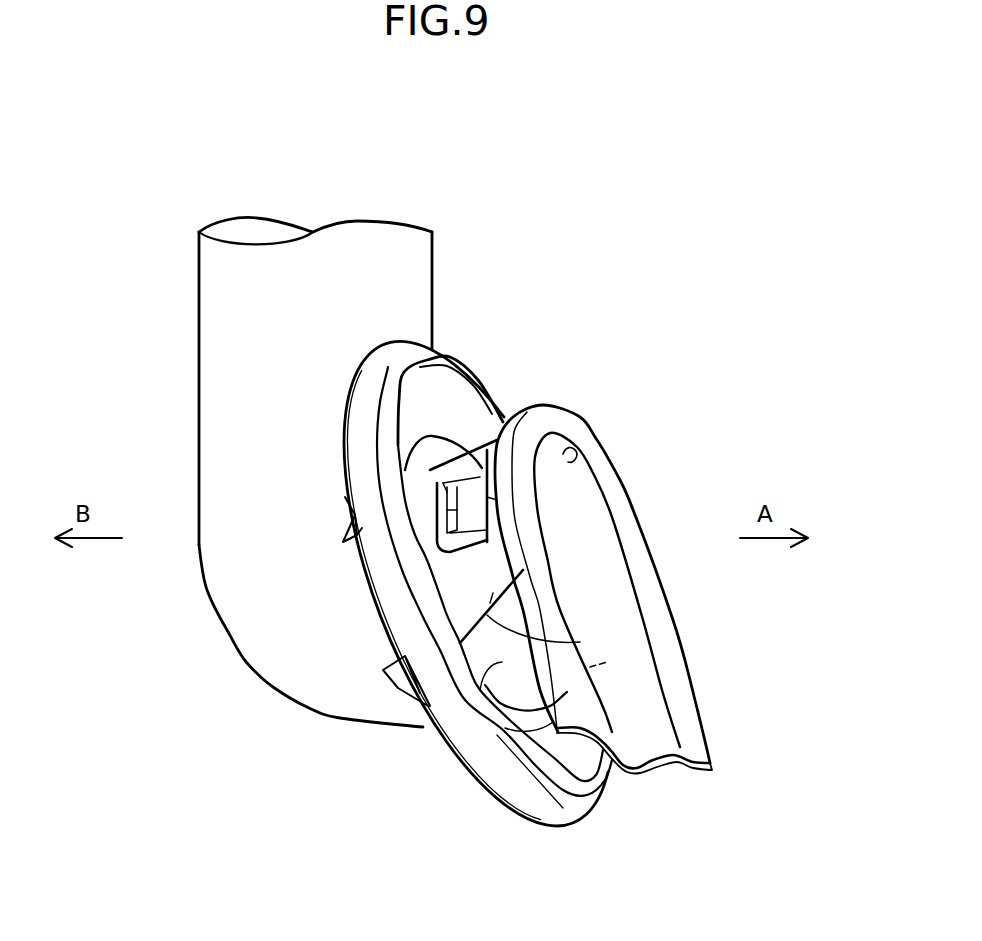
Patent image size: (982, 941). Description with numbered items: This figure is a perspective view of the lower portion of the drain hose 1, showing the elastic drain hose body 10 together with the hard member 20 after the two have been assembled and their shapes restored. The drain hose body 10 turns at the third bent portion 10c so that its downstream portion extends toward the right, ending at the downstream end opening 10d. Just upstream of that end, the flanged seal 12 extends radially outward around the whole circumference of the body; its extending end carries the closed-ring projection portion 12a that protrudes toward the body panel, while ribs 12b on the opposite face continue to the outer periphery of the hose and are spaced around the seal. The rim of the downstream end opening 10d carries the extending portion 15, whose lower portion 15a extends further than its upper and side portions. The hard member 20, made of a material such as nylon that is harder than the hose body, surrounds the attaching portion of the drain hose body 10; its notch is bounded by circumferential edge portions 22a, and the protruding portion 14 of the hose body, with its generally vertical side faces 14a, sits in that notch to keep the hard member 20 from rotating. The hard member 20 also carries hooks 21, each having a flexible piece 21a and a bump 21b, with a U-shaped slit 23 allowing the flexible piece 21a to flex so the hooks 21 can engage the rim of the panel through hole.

The drain hose 1 is at (140, 265).
The drain hose body 10 is at (199, 357).
The third bent portion 10c is at (247, 664).
The downstream end opening 10d is at (573, 455).
The seal 12 is at (385, 356).
The projection portion 12a is at (466, 370).
The ribs 12b is at (343, 510).
The protruding portion 14 is at (500, 667).
The side faces 14a is at (493, 593).
The extending portion 15 is at (548, 404).
The lower portion 15a is at (648, 772).
The hard member 20 is at (474, 446).
The hooks 21 is at (417, 453).
The flexible piece 21a is at (445, 483).
The bump 21b is at (470, 510).
The circumferential edge portions 22a is at (613, 660).
The slit 23 is at (487, 497).